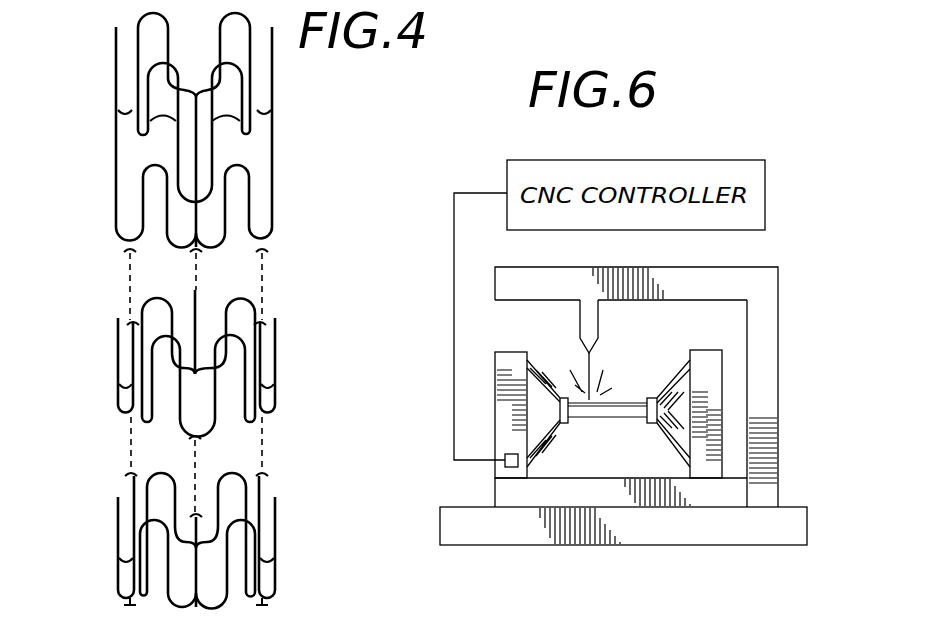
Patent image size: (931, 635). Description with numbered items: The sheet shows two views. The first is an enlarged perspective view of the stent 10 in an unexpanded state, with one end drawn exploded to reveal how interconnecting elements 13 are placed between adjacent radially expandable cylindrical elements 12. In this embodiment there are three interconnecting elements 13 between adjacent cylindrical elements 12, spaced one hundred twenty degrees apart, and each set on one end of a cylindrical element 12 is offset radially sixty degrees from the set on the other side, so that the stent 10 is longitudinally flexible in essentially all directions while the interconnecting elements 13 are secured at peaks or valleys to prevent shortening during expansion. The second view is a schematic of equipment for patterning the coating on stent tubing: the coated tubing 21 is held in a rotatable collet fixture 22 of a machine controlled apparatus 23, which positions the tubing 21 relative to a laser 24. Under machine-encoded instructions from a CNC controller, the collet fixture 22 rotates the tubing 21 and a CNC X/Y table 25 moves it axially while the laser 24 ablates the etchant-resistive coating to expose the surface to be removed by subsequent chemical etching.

In FIG. 4, the stent 10 is at (108, 112).
In FIG. 4, the radially expandable cylindrical element 12 is at (273, 111).
In FIG. 4, the interconnecting element 13 is at (266, 248).
In FIG. 6, the coated tubing 21 is at (632, 410).
In FIG. 6, the rotatable collet fixture 22 is at (529, 372).
In FIG. 6, the machine controlled apparatus 23 is at (723, 351).
In FIG. 6, the laser 24 is at (599, 346).
In FIG. 6, the CNC X/Y table 25 is at (800, 507).